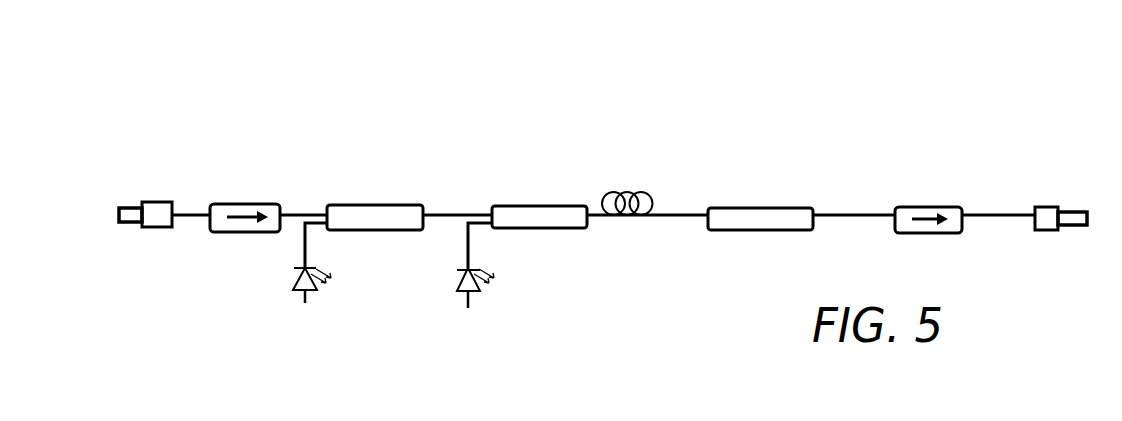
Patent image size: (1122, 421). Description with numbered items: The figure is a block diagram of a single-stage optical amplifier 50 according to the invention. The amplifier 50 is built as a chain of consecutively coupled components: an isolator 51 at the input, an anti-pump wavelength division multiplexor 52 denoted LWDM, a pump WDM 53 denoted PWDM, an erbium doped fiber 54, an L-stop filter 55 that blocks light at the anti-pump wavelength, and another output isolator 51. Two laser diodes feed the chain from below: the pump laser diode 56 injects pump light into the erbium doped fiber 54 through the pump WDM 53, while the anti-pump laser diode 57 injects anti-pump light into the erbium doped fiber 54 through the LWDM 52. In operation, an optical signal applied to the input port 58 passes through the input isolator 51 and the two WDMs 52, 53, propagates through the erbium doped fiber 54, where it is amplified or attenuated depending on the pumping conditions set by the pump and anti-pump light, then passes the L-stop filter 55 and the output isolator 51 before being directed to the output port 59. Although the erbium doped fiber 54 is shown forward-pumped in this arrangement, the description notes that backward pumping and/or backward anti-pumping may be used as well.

The optical amplifier 50 is at (750, 55).
The isolator 51 is at (245, 204).
The anti-pump wavelength division multiplexor 52 is at (377, 203).
The pump WDM 53 is at (535, 205).
The erbium doped fiber 54 is at (630, 218).
The L-stop filter 55 is at (758, 207).
The pump laser diode 56 is at (462, 280).
The anti-pump laser diode 57 is at (295, 278).
The input port 58 is at (160, 202).
The output port 59 is at (1048, 205).